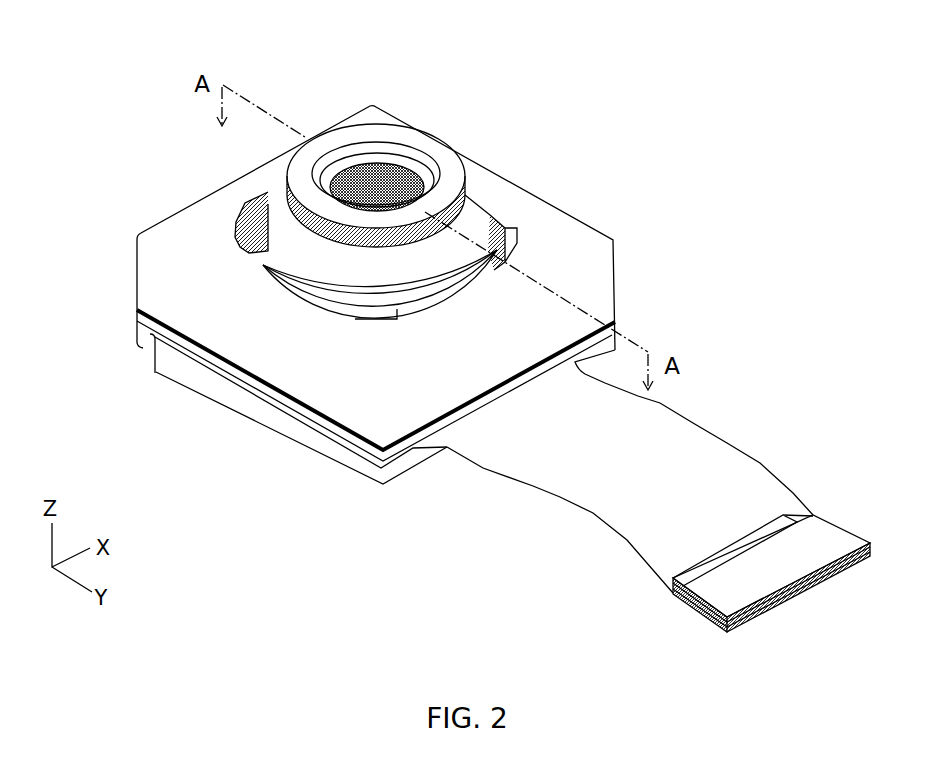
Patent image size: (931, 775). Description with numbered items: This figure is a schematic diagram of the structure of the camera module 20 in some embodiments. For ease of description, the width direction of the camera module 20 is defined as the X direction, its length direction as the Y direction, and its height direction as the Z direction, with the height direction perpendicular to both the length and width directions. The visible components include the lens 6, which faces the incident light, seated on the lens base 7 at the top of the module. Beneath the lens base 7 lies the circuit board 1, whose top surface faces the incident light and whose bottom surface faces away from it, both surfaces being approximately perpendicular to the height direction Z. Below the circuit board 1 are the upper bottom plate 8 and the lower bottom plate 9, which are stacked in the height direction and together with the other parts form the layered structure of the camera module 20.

The camera module 20 is at (48, 34).
The lens 6 is at (435, 153).
The lens base 7 is at (182, 260).
The circuit board 1 is at (188, 365).
The upper bottom plate 8 is at (283, 407).
The lower bottom plate 9 is at (313, 447).